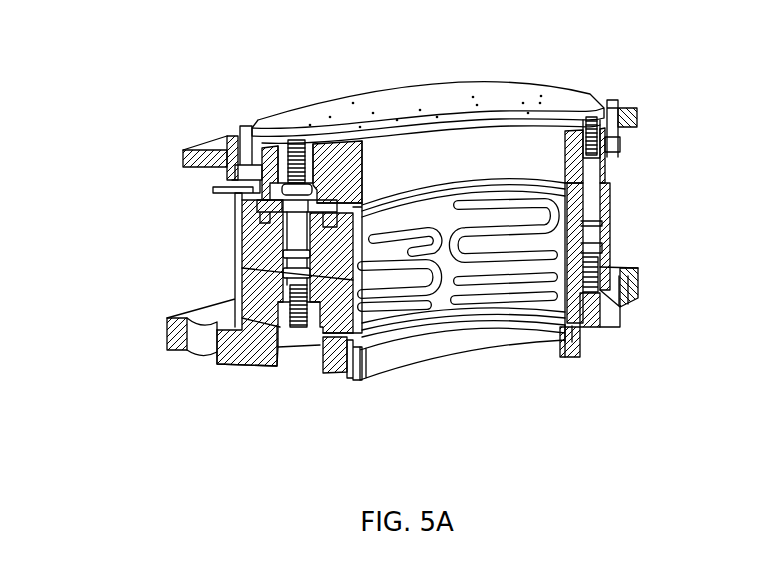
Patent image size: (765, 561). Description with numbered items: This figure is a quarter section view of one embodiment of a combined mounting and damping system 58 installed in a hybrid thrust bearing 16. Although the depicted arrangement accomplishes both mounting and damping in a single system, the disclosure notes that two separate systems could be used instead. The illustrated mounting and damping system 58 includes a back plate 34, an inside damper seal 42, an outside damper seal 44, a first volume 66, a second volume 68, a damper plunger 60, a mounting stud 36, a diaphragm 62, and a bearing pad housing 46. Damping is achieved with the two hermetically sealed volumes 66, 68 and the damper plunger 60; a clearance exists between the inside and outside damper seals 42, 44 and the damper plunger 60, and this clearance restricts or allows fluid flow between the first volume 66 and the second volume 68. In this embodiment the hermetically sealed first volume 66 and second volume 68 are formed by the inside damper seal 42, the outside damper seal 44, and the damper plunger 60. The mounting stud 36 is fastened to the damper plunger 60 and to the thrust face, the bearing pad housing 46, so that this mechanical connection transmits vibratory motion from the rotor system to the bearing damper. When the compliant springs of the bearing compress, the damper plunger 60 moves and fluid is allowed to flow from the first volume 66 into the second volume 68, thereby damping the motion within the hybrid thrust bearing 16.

The hybrid thrust bearing 16 is at (600, 53).
The back plate 34 is at (545, 350).
The mounting stud 36 is at (265, 237).
The inside damper seal 42 is at (610, 205).
The outside damper seal 44 is at (238, 246).
The bearing pad housing 46 is at (637, 112).
The mounting and damping system 58 is at (147, 357).
The damper plunger 60 is at (262, 352).
The diaphragm 62 is at (217, 187).
The first volume 66 is at (245, 262).
The second volume 68 is at (330, 368).